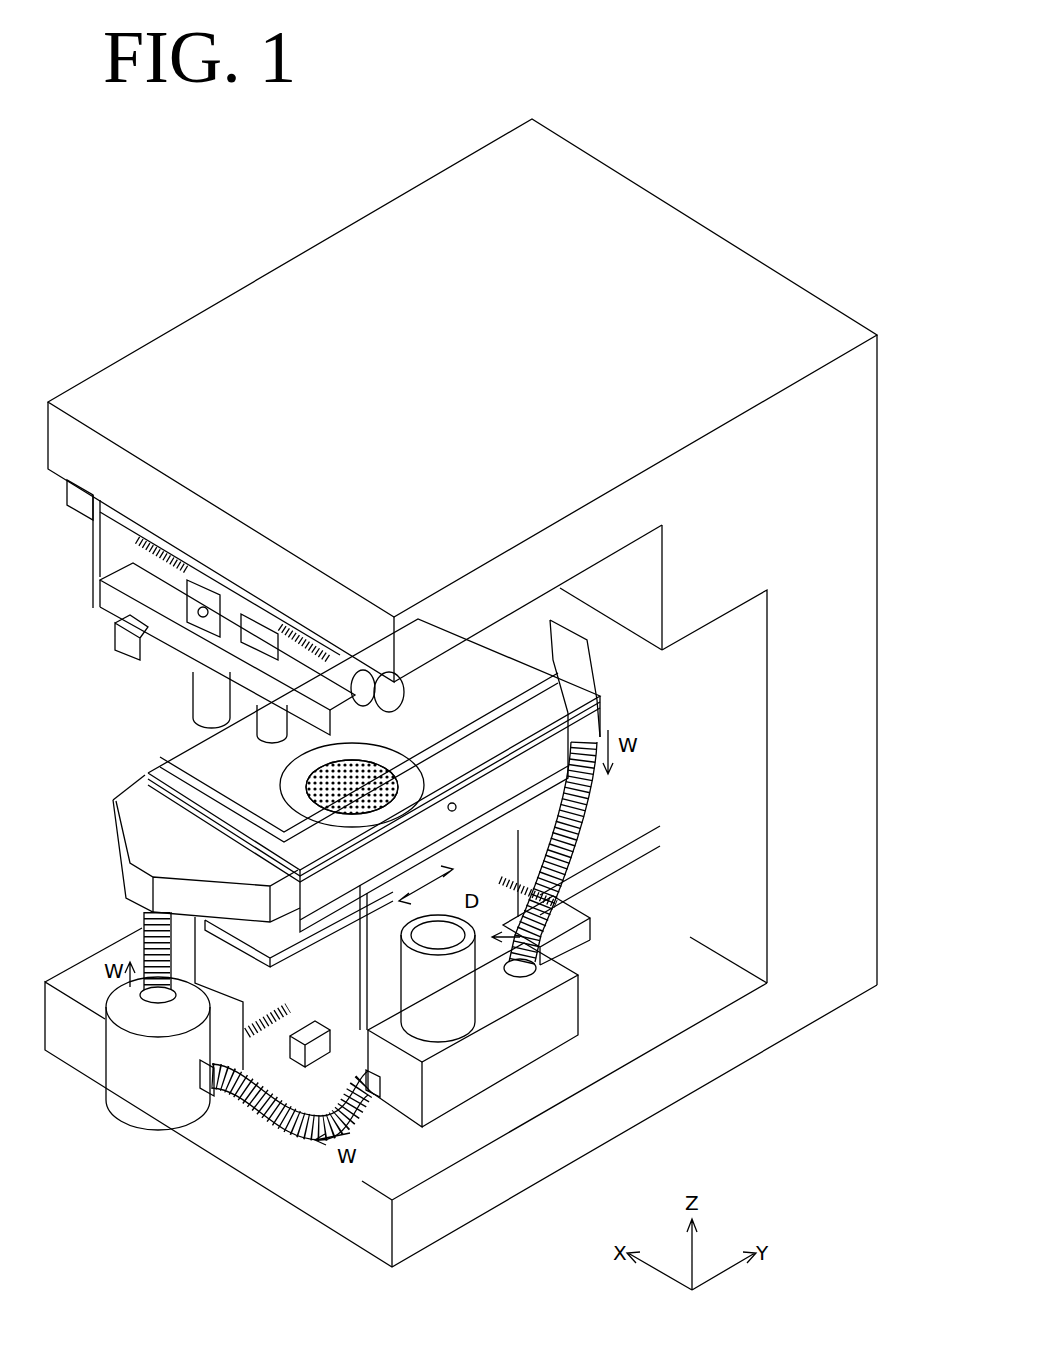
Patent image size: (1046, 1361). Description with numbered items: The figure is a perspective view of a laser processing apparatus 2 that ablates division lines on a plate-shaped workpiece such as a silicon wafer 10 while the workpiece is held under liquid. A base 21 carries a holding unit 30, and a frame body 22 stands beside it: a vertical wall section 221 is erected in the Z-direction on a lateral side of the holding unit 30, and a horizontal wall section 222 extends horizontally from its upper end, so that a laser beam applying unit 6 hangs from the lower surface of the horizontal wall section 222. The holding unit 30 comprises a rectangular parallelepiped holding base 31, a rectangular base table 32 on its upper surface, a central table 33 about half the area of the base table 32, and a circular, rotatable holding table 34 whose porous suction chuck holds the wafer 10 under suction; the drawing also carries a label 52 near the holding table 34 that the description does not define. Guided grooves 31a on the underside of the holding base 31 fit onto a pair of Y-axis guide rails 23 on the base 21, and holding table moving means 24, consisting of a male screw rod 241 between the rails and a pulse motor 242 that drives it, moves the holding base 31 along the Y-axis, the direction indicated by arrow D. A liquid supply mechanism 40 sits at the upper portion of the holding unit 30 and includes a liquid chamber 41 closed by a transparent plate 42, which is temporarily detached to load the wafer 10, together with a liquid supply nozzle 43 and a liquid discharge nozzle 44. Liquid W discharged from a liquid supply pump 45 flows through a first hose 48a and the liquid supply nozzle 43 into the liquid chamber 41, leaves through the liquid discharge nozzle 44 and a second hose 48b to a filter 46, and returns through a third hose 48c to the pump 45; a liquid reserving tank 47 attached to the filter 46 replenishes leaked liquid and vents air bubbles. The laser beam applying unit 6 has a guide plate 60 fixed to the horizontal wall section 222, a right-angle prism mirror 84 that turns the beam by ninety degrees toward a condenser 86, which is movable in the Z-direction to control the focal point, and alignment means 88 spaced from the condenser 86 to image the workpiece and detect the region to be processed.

The laser processing apparatus 2 is at (751, 210).
The laser beam applying unit 6 is at (208, 621).
The wafer 10 is at (345, 733).
The base 21 is at (700, 1053).
The frame body 22 is at (685, 754).
The vertical wall section 221 is at (810, 683).
The horizontal wall section 222 is at (565, 570).
The guide rails 23 is at (302, 1040).
The holding table moving means 24 is at (643, 871).
The male screw rod 241 is at (570, 892).
The pulse motor 242 is at (640, 860).
The holding unit 30 is at (496, 946).
The holding base 31 is at (557, 905).
The guided grooves 31a is at (327, 1050).
The base table 32 is at (280, 937).
The central table 33 is at (115, 808).
The holding table 34 is at (413, 739).
The liquid supply mechanism 40 is at (340, 814).
The liquid chamber 41 is at (597, 780).
The transparent plate 42 is at (516, 690).
The liquid supply nozzle 43 is at (127, 850).
The liquid discharge nozzle 44 is at (563, 653).
The liquid supply pump 45 is at (122, 1063).
The filter 46 is at (510, 1057).
The liquid reserving tank 47 is at (453, 1010).
The first hose 48a is at (142, 952).
The second hose 48b is at (583, 830).
The third hose 48c is at (362, 1118).
The porous member 52 is at (415, 785).
The guide plate 60 is at (117, 520).
The right-angle prism mirror 84 is at (127, 648).
The condenser 86 is at (205, 713).
The alignment means 88 is at (235, 745).